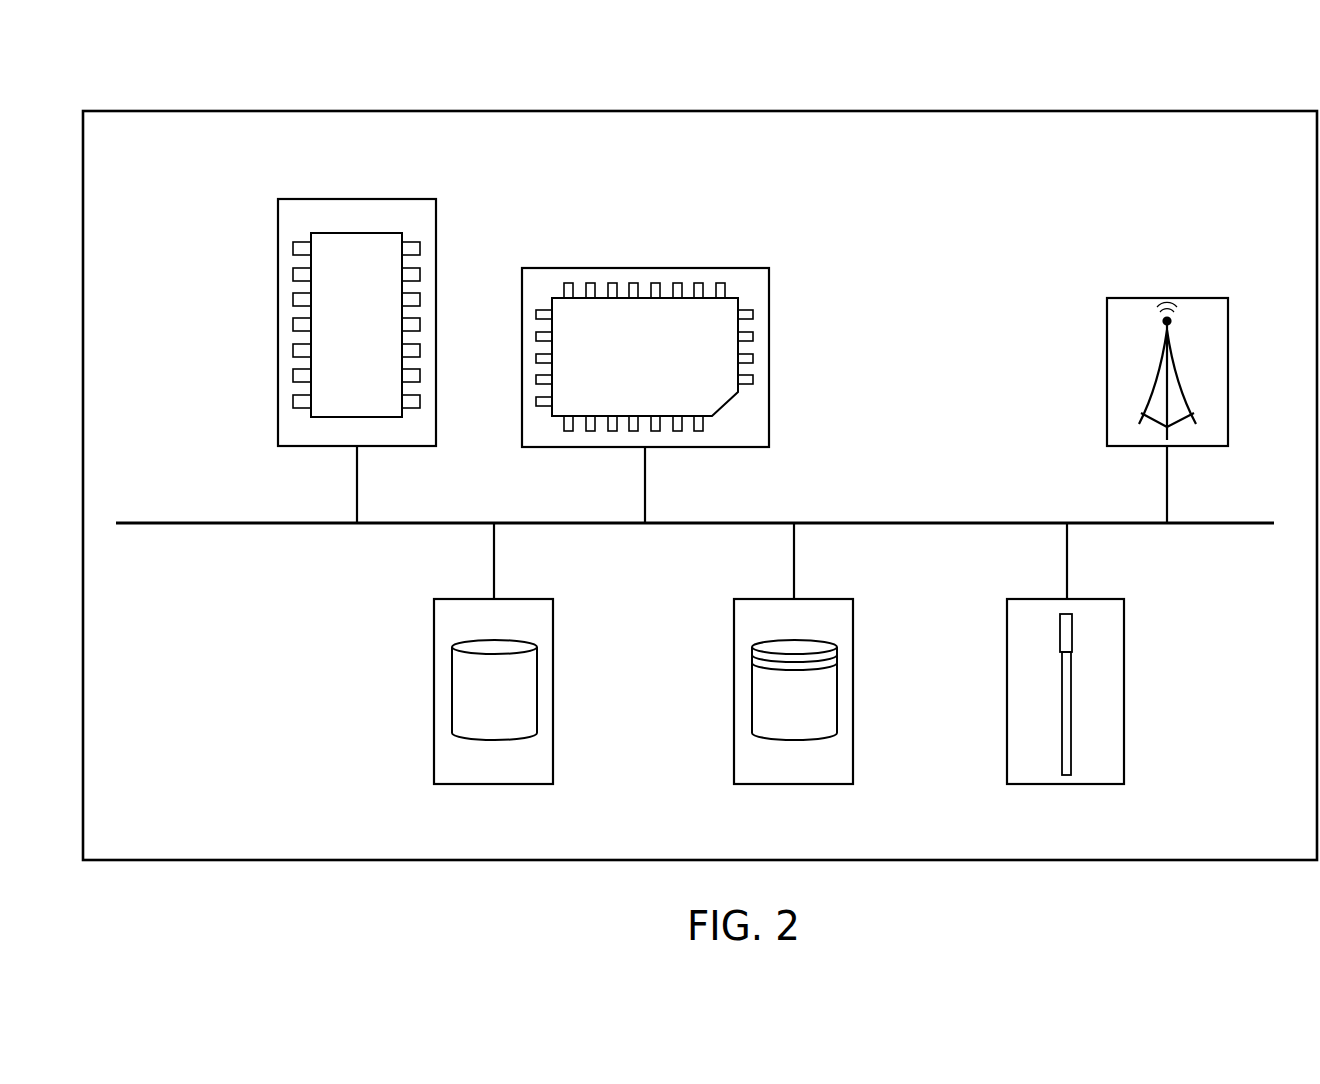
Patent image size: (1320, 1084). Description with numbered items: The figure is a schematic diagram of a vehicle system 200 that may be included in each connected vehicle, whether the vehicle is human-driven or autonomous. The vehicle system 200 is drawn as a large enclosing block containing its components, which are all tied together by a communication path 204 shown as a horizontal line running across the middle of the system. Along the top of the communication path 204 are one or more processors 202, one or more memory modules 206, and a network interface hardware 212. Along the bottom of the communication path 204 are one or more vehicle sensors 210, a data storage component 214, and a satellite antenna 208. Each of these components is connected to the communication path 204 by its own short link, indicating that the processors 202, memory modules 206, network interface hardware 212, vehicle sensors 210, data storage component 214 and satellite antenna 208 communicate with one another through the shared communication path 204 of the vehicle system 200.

The vehicle system 200 is at (192, 111).
The processors 202 is at (357, 199).
The communication path 204 is at (160, 523).
The memory modules 206 is at (645, 268).
The satellite antenna 208 is at (1067, 784).
The vehicle sensors 210 is at (494, 784).
The network interface hardware 212 is at (1167, 298).
The data storage component 214 is at (794, 784).